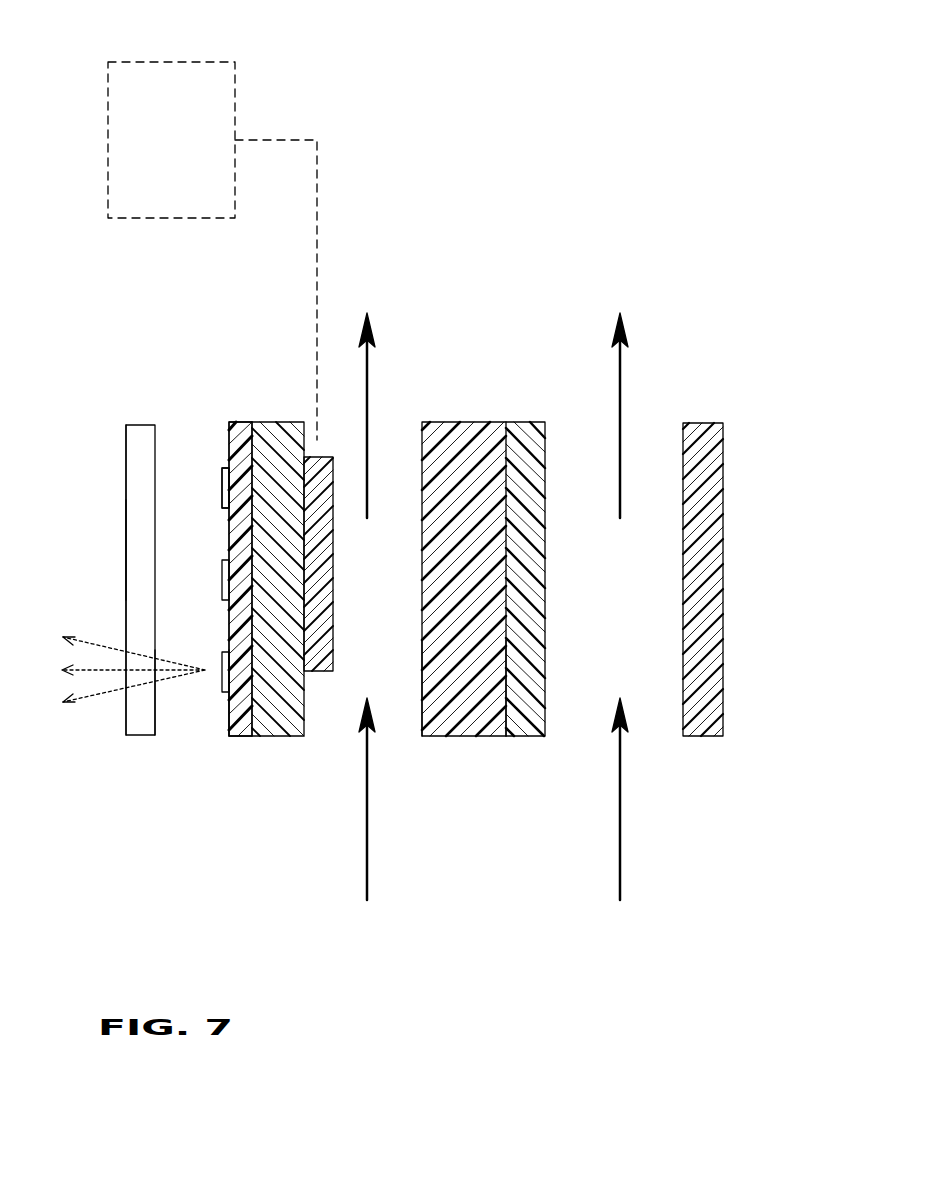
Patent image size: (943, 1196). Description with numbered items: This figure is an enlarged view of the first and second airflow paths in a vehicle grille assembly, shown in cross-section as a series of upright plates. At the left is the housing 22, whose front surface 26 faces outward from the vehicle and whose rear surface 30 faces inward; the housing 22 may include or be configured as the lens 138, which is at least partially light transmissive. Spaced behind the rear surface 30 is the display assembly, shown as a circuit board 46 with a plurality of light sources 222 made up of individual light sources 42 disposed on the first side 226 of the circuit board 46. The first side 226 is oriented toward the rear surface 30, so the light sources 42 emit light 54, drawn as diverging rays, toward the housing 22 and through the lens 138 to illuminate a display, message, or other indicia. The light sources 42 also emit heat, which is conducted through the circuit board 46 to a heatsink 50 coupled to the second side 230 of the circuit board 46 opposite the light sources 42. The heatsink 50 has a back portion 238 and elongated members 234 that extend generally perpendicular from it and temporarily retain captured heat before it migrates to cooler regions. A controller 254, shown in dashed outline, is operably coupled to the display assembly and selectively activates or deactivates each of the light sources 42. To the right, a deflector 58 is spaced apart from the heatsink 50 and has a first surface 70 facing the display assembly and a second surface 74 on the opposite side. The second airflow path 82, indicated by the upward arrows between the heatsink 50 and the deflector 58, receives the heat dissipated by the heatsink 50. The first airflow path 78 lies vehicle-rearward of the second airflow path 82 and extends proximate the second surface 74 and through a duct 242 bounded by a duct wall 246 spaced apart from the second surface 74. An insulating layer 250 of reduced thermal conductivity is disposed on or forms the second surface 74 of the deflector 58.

The housing 22 is at (138, 424).
The front surface 26 is at (126, 487).
The lens 138 is at (126, 543).
The rear surface 30 is at (155, 715).
The light 54 is at (103, 695).
The light source 42 is at (223, 482).
The first side of the circuit board 226 is at (228, 442).
The circuit board 46 is at (237, 435).
The heatsink 50 is at (273, 713).
The second side of the circuit board 230 is at (253, 463).
The plurality of light sources 222 is at (217, 701).
The elongated members 234 is at (318, 675).
The back portion 238 is at (305, 435).
The controller 254 is at (108, 132).
The second airflow path 82 is at (367, 867).
The first airflow path 78 is at (620, 858).
The deflector 58 is at (458, 422).
The insulating layer 250 is at (520, 422).
The first surface 70 is at (422, 712).
The second surface 74 is at (523, 736).
The duct 242 is at (682, 448).
The duct wall 246 is at (715, 508).